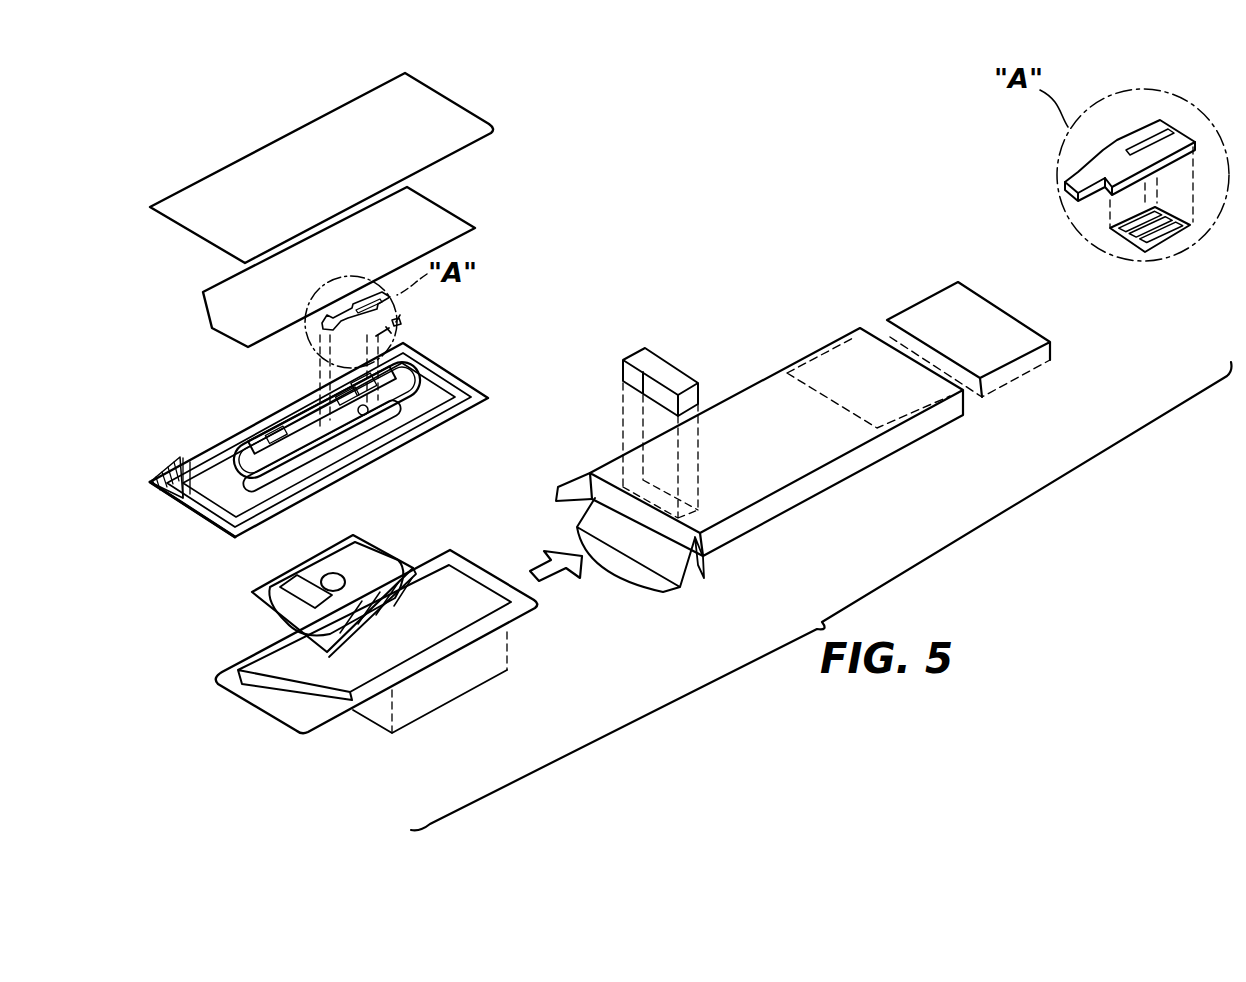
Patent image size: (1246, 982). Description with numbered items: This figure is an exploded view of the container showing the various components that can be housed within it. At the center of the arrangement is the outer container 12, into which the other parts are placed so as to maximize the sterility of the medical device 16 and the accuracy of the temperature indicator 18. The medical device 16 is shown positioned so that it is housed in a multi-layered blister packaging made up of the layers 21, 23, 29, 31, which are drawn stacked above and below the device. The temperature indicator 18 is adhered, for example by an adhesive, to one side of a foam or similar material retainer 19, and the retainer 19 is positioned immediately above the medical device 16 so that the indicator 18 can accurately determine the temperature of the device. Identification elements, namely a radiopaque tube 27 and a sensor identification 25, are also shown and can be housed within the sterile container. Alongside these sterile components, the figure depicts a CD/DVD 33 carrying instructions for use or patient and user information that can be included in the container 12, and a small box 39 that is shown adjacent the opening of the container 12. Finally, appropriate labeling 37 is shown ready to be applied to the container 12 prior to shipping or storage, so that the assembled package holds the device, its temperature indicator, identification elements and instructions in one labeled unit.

The outer container 12 is at (750, 383).
The medical device 16 is at (372, 430).
The temperature indicator 18 is at (1122, 238).
The retainer 19 is at (1064, 186).
The blister packaging layer 21 is at (457, 100).
The blister packaging layer 23 is at (443, 204).
The sensor identification 25 is at (402, 323).
The radiopaque tube 27 is at (390, 332).
The blister packaging layer 29 is at (222, 444).
The blister packaging layer 31 is at (200, 505).
The CD/DVD 33 is at (322, 568).
The labeling 37 is at (1010, 364).
The small box 39 is at (641, 350).